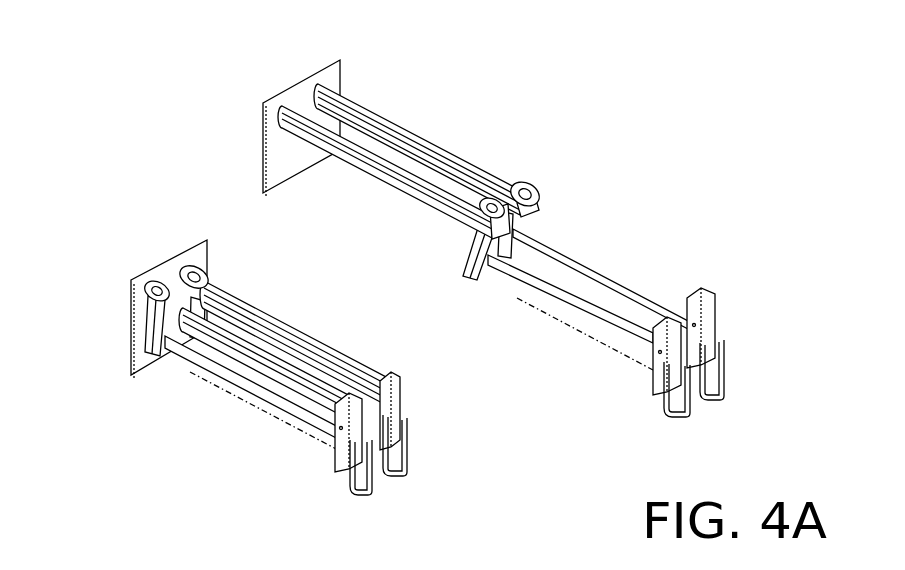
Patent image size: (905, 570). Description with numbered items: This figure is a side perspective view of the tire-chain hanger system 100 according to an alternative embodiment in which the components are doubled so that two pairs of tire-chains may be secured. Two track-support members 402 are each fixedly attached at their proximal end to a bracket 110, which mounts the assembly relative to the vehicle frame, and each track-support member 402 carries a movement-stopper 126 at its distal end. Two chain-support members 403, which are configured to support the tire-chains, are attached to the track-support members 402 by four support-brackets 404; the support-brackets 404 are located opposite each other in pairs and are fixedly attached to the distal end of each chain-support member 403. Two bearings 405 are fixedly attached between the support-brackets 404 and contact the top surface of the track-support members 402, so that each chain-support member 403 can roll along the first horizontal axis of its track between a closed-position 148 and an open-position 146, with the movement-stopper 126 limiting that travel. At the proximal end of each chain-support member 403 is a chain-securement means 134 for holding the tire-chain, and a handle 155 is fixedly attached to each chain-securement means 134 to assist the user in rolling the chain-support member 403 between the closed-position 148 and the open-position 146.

The system 100 is at (114, 124).
The bracket 110 is at (300, 98).
The movement-stopper 126 is at (540, 200).
The chain-securement means 134 is at (715, 305).
The open-position 146 is at (699, 124).
The closed-position 148 is at (131, 149).
The handle 155 is at (726, 396).
The track-support members 402 is at (353, 150).
The chain-support members 403 is at (560, 304).
The support-brackets 404 is at (530, 212).
The bearings 405 is at (532, 180).